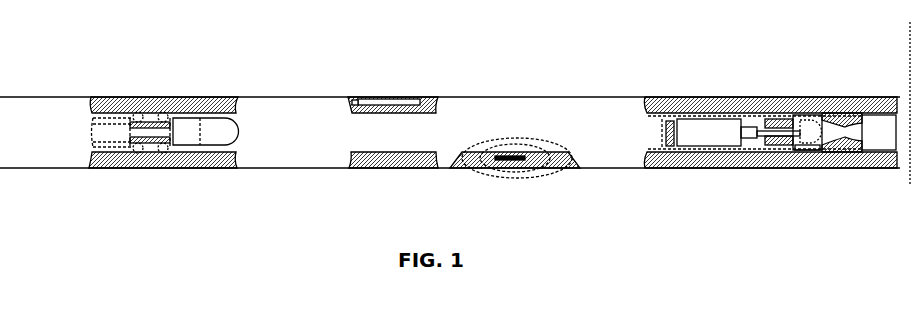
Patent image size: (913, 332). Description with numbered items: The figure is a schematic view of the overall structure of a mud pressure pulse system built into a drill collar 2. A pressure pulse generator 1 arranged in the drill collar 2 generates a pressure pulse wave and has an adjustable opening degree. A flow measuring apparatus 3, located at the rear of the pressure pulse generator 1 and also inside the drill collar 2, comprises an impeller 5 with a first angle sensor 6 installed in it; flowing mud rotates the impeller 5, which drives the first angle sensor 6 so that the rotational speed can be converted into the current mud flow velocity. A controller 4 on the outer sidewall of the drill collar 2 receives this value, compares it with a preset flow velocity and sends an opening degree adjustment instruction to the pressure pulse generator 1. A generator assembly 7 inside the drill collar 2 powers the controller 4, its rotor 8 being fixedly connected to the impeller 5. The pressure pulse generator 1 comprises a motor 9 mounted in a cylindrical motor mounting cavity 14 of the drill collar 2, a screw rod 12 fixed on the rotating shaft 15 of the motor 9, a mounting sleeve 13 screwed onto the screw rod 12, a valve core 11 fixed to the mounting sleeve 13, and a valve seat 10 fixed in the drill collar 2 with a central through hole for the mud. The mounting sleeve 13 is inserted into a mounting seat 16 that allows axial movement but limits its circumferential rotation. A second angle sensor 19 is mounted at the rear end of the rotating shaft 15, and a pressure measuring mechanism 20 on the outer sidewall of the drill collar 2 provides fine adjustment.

The pressure pulse generator 1 is at (837, 54).
The drill collar 2 is at (576, 114).
The flow measuring apparatus 3 is at (167, 54).
The controller 4 is at (384, 100).
The impeller 5 is at (135, 116).
The first angle sensor 6 is at (148, 119).
The generator assembly 7 is at (192, 133).
The rotor 8 is at (168, 122).
The motor 9 is at (698, 128).
The valve seat 10 is at (840, 118).
The valve core 11 is at (805, 126).
The screw rod 12 is at (770, 121).
The mounting sleeve 13 is at (795, 116).
The motor mounting cavity 14 is at (750, 139).
The rotating shaft 15 is at (768, 147).
The mounting seat 16 is at (803, 150).
The second angle sensor 19 is at (670, 148).
The pressure measuring mechanism 20 is at (522, 140).